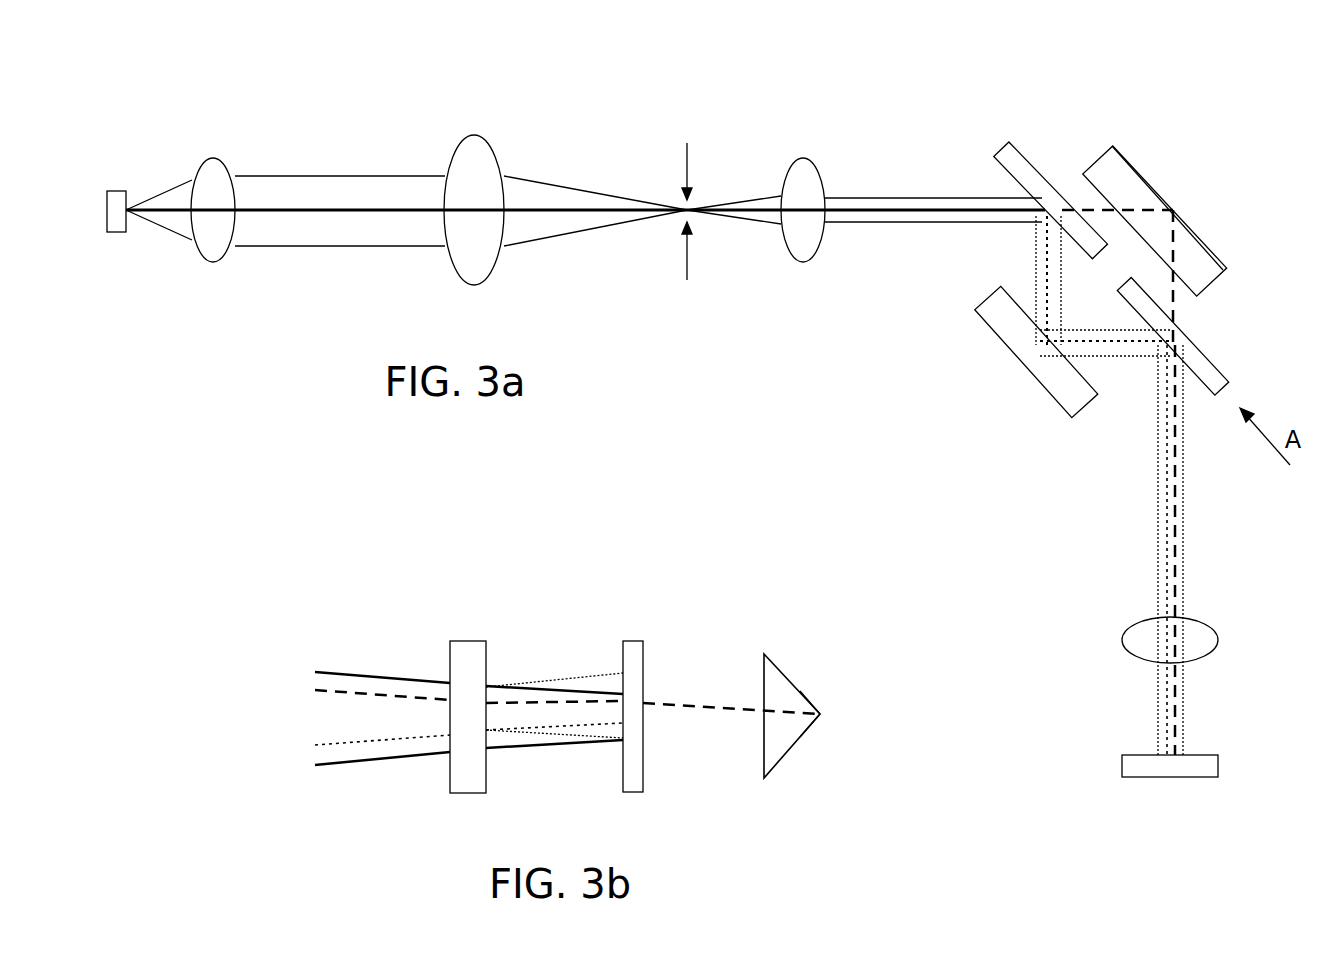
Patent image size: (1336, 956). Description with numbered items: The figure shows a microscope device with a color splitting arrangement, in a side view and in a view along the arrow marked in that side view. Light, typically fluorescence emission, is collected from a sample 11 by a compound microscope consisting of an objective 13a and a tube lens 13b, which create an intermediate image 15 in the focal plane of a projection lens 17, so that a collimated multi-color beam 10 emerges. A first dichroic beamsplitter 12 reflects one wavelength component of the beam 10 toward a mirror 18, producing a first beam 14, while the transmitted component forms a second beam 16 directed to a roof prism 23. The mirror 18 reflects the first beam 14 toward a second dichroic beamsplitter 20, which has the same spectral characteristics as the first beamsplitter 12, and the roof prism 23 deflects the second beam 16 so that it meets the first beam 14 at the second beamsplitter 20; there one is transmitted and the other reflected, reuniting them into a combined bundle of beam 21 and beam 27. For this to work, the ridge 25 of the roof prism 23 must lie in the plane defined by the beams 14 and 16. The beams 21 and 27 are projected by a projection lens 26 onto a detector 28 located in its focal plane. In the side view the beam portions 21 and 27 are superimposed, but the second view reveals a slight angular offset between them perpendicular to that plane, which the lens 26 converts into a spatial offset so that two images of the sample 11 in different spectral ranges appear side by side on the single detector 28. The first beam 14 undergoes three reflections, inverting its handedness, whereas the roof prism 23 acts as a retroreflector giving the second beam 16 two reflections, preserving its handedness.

In FIG. 3a, the collimated multi-color beam 10 is at (329, 207).
In FIG. 3b, the collimated multi-color beam 10 is at (348, 672).
In FIG. 3a, the sample 11 is at (117, 190).
In FIG. 3a, the first dichroic beamsplitter 12 is at (1030, 165).
In FIG. 3a, the objective 13a is at (213, 172).
In FIG. 3a, the tube lens 13b is at (468, 160).
In FIG. 3a, the first beam 14 is at (1035, 265).
In FIG. 3a, the intermediate image 15 is at (687, 143).
In FIG. 3a, the second beam 16 is at (1083, 210).
In FIG. 3b, the second beam 16 is at (684, 703).
In FIG. 3a, the projection lens 17 is at (803, 185).
In FIG. 3a, the mirror 18 is at (1030, 350).
In FIG. 3b, the mirror 18 is at (475, 655).
In FIG. 3a, the second dichroic beamsplitter 20 is at (1205, 362).
In FIG. 3b, the second dichroic beamsplitter 20 is at (632, 665).
In FIG. 3a, the beam 21 is at (1160, 537).
In FIG. 3b, the beam 21 is at (384, 745).
In FIG. 3a, the roof prism 23 is at (1122, 188).
In FIG. 3b, the roof prism 23 is at (782, 757).
In FIG. 3a, the ridge 25 is at (1205, 246).
In FIG. 3b, the ridge 25 is at (822, 718).
In FIG. 3a, the projection lens 26 is at (1198, 632).
In FIG. 3a, the beam 27 is at (1178, 510).
In FIG. 3b, the beam 27 is at (400, 697).
In FIG. 3a, the detector 28 is at (1197, 776).